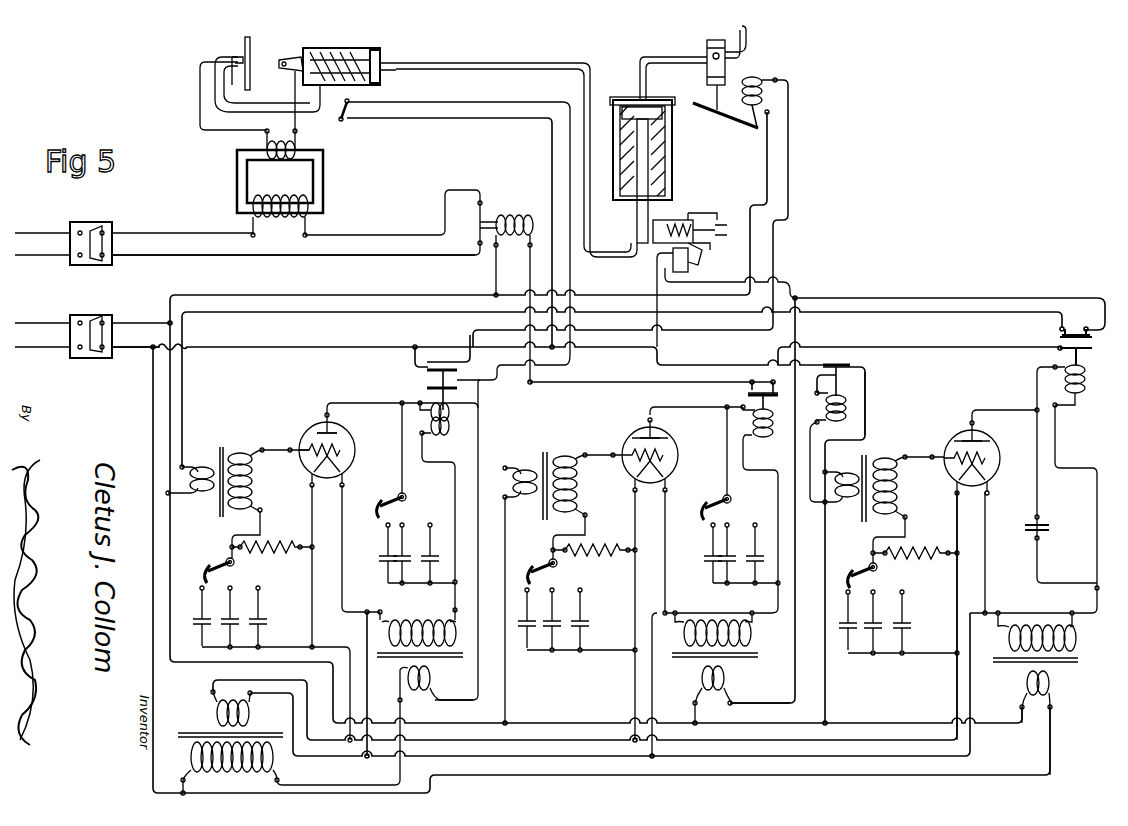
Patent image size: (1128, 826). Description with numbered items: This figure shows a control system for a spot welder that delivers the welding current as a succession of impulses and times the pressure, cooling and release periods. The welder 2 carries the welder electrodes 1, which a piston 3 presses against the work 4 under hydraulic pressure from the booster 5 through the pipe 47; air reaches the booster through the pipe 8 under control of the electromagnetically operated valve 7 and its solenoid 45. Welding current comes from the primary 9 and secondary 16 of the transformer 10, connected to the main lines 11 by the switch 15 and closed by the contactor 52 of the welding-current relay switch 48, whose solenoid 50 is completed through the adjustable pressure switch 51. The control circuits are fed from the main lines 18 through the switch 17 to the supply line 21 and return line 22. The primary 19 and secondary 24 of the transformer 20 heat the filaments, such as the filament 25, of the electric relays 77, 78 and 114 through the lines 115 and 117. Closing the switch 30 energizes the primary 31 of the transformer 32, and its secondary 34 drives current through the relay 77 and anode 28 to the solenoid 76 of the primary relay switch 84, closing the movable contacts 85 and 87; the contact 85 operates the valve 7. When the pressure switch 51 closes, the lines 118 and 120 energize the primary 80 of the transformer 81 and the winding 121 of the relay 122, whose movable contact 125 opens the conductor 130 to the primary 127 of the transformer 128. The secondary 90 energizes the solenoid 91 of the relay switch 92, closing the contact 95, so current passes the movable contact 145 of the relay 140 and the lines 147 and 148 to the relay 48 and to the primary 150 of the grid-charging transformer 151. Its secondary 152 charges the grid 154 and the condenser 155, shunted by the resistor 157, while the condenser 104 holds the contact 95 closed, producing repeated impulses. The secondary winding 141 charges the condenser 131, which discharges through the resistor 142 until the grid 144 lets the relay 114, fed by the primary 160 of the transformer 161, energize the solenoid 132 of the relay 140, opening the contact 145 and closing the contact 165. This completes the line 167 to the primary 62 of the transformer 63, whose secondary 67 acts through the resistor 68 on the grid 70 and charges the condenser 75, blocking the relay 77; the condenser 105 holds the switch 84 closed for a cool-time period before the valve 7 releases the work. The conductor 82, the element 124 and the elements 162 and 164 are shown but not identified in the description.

The welder electrodes 1 is at (236, 56).
The welder 2 is at (341, 55).
The piston 3 is at (381, 54).
The work 4 is at (252, 55).
The booster 5 is at (653, 170).
The electromagnetically operated valve 7 is at (707, 48).
The pipe 8 is at (673, 65).
The primary 9 is at (279, 222).
The transformer 10 is at (297, 181).
The main lines 11 is at (42, 262).
The switch 15 is at (93, 230).
The secondary 16 is at (294, 142).
The switch 17 is at (93, 320).
The main lines 18 is at (42, 350).
The primary 19 is at (190, 762).
The transformer 20 is at (231, 721).
The supply line 21 is at (490, 120).
The return line 22 is at (316, 296).
The secondary 24 is at (216, 711).
The filament 25 is at (376, 500).
The anode 28 is at (338, 437).
The switch 30 is at (342, 121).
The primary 31 is at (432, 684).
The transformer 32 is at (428, 646).
The secondary 34 is at (415, 620).
The solenoid 45 is at (740, 203).
The pipe 47 is at (493, 66).
The welding-current relay switch 48 is at (514, 210).
The solenoid 50 is at (513, 238).
The adjustable pressure switch 51 is at (689, 266).
The contactor 52 is at (477, 234).
The primary 62 is at (195, 468).
The transformer 63 is at (211, 549).
The secondary 67 is at (252, 470).
The resistor 68 is at (274, 546).
The grid 70 is at (306, 468).
The condenser 75 is at (195, 632).
The solenoid 76 is at (456, 470).
The electric relay 77 is at (376, 444).
The electric relay 78 is at (679, 448).
The primary 80 is at (726, 683).
The transformer 81 is at (728, 662).
The conductor 82 is at (500, 103).
The primary relay switch 84 is at (446, 414).
The movable contact 85 is at (418, 369).
The movable contact 87 is at (426, 390).
The secondary 90 is at (717, 618).
The solenoid 91 is at (754, 426).
The relay switch 92 is at (742, 463).
The contact 95 is at (747, 394).
The discharge-controlled condenser 104 is at (756, 523).
The condenser 105 is at (431, 523).
The electric relay 114 is at (980, 452).
The line 115 is at (309, 748).
The line 117 is at (588, 741).
The line 118 is at (940, 298).
The line 120 is at (796, 335).
The winding 121 is at (823, 408).
The relay 122 is at (818, 384).
The conductor 124 is at (812, 432).
The movable contact 125 is at (851, 366).
The primary 127 is at (844, 498).
The transformer 128 is at (856, 556).
The conductor 130 is at (866, 411).
The condenser 131 is at (905, 623).
The solenoid 132 is at (1090, 425).
The relay 140 is at (1086, 380).
The secondary winding 141 is at (897, 493).
The resistor 142 is at (922, 550).
The grid 144 is at (980, 456).
The movable contact 145 is at (1058, 344).
The line 147 is at (927, 349).
The line 148 is at (582, 383).
The primary 150 is at (528, 466).
The grid-charging transformer 151 is at (535, 552).
The secondary 152 is at (578, 483).
The grid 154 is at (632, 447).
The discharge-controlled condenser 155 is at (590, 625).
The resistor 157 is at (596, 548).
The primary 160 is at (1038, 697).
The transformer 161 is at (1048, 678).
The winding 162 is at (1040, 622).
The condenser 164 is at (1040, 525).
The contact 165 is at (1060, 338).
The line 167 is at (183, 404).